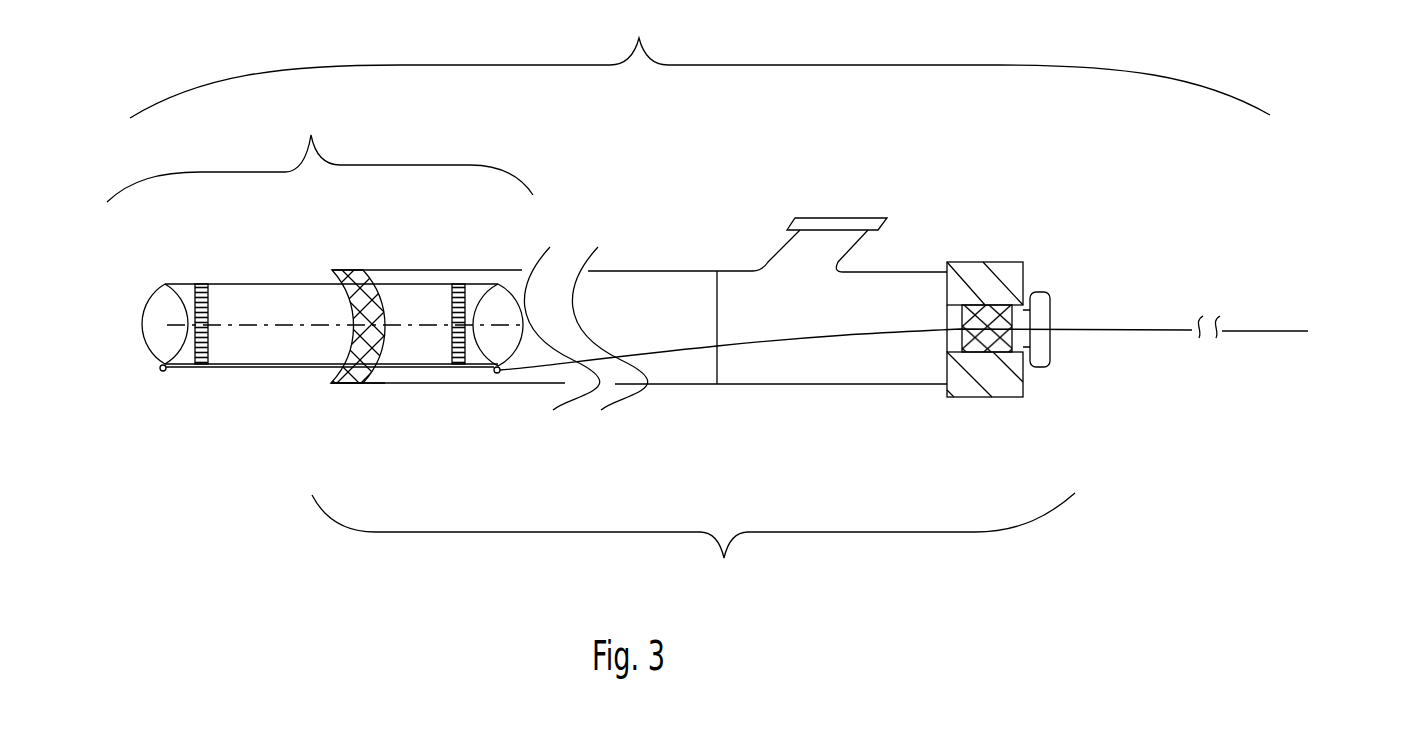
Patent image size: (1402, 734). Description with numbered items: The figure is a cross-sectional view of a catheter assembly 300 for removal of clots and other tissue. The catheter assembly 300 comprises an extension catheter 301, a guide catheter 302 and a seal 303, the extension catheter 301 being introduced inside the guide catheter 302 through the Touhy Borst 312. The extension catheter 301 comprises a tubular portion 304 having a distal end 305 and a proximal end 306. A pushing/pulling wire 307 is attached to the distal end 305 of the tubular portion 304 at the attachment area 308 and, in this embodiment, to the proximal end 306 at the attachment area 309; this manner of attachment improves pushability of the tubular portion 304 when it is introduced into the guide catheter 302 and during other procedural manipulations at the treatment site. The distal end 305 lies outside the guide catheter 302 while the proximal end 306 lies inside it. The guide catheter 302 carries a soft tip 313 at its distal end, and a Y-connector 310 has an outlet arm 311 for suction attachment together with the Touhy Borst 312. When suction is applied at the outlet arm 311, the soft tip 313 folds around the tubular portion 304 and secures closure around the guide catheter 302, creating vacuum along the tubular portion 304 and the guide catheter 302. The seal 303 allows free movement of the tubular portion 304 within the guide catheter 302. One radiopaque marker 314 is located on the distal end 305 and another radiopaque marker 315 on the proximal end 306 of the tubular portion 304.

The catheter assembly 300 is at (700, 65).
The extension catheter 301 is at (245, 282).
The guide catheter 302 is at (418, 270).
The seal 303 is at (328, 276).
The tubular portion 304 is at (320, 155).
The distal end 305 is at (143, 307).
The proximal end 306 is at (508, 285).
The pushing/pulling wire 307 is at (228, 370).
The attachment area 308 is at (158, 373).
The attachment area 309 is at (501, 374).
The Y-connector 310 is at (887, 268).
The outlet arm 311 is at (832, 217).
The Touhy Borst 312 is at (987, 399).
The soft tip 313 is at (357, 386).
The radiopaque marker 314 is at (202, 368).
The radiopaque marker 315 is at (457, 284).